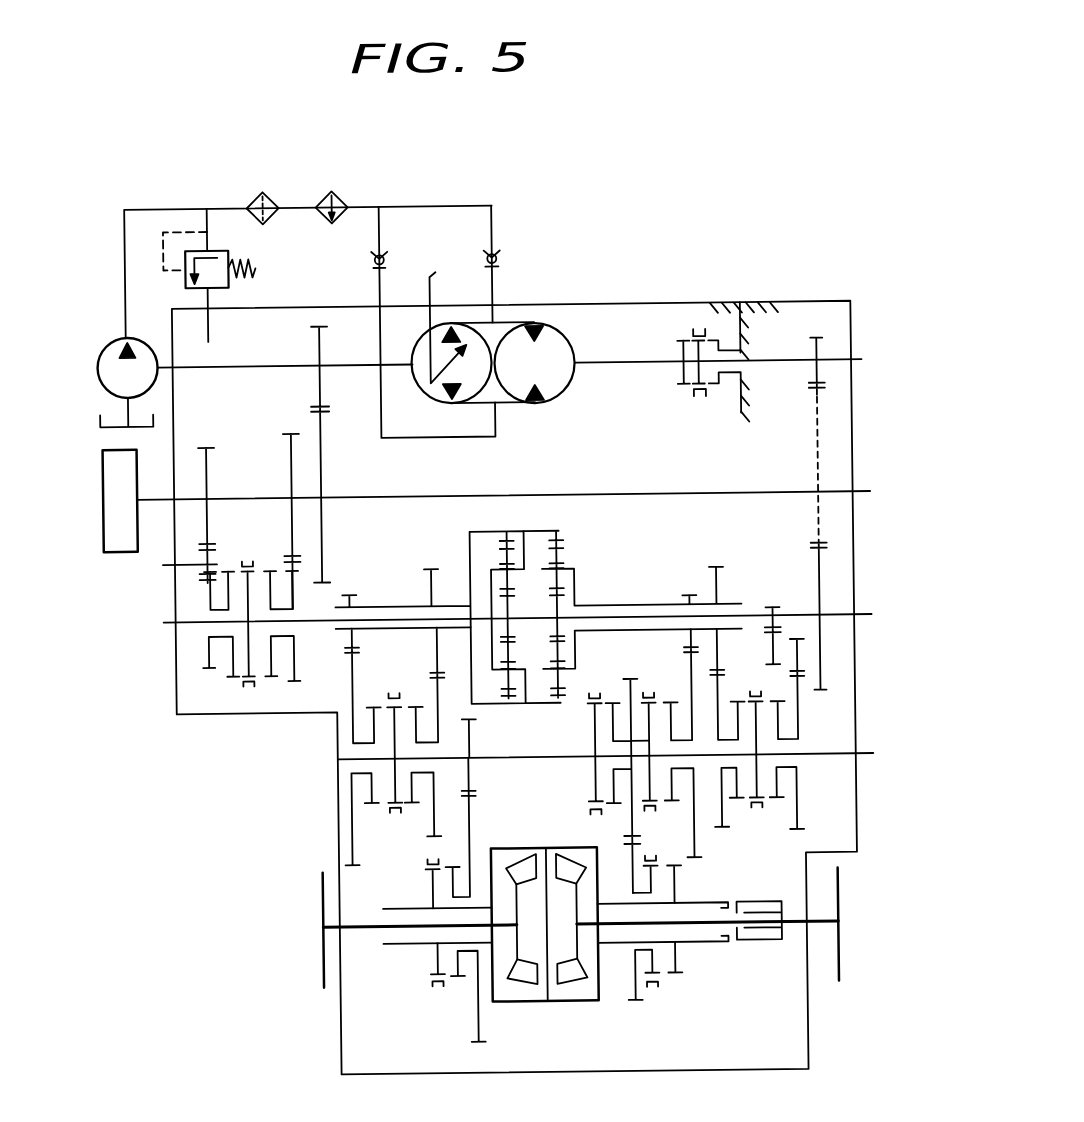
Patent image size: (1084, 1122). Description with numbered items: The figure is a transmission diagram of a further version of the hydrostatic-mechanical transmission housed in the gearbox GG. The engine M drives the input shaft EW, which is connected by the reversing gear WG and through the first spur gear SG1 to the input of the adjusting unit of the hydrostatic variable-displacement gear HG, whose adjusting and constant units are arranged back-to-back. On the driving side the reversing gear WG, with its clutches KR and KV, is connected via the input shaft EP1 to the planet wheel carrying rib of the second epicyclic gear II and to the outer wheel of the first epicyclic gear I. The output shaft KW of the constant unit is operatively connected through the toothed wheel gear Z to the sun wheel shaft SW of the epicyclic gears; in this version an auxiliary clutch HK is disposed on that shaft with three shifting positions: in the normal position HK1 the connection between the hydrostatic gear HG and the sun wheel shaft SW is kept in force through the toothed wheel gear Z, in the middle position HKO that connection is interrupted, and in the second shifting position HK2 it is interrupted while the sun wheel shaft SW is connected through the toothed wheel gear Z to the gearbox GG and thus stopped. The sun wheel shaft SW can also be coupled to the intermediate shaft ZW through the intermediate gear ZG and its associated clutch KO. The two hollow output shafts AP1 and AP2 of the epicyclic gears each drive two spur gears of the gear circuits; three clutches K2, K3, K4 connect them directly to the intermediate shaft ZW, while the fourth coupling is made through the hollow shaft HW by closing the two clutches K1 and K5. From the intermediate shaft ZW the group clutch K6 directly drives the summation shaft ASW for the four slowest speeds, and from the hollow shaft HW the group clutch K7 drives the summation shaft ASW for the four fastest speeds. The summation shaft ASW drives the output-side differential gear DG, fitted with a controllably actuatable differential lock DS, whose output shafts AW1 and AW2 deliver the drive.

The engine M is at (123, 548).
The first spur gear SG1 is at (318, 424).
The hydrostatic variable-displacement gear HG is at (511, 329).
The output shaft of the constant unit KW is at (659, 359).
The normal position HK1 is at (687, 334).
The middle position HKO is at (704, 326).
The second shifting position HK2 is at (719, 338).
The auxiliary clutch HK is at (704, 402).
The toothed wheel gear Z is at (817, 373).
The input shaft EW is at (407, 493).
The reversing gear WG is at (276, 556).
The reverse clutch KR is at (236, 676).
The forward clutch KV is at (271, 676).
The second epicyclic gear II is at (509, 530).
The first epicyclic gear I is at (564, 530).
The output shaft of the epicyclic gears AP2 is at (366, 604).
The sun wheel shaft SW is at (628, 606).
The output shaft of the epicyclic gears AP1 is at (631, 605).
The input shaft of the epicyclic gear EP1 is at (401, 628).
The intermediate gear ZG is at (800, 655).
The intermediate shaft ZW is at (520, 756).
The hollow shaft HW is at (615, 742).
The gearbox GG is at (336, 790).
The clutch K2 is at (385, 813).
The clutch K4 is at (410, 813).
The clutch K5 is at (588, 812).
The clutch K1 is at (650, 817).
The clutch K3 is at (748, 812).
The clutch KO is at (764, 812).
The output shaft AW1 is at (320, 912).
The output shaft AW2 is at (842, 938).
The differential lock DS is at (770, 944).
The group clutch K6 is at (434, 993).
The driven summation shaft ASW is at (557, 1002).
The differential gear DG is at (566, 984).
The group clutch K7 is at (648, 990).